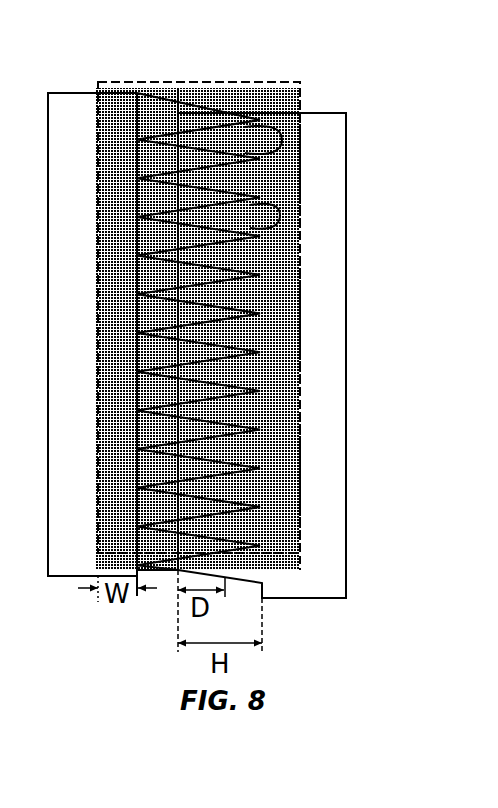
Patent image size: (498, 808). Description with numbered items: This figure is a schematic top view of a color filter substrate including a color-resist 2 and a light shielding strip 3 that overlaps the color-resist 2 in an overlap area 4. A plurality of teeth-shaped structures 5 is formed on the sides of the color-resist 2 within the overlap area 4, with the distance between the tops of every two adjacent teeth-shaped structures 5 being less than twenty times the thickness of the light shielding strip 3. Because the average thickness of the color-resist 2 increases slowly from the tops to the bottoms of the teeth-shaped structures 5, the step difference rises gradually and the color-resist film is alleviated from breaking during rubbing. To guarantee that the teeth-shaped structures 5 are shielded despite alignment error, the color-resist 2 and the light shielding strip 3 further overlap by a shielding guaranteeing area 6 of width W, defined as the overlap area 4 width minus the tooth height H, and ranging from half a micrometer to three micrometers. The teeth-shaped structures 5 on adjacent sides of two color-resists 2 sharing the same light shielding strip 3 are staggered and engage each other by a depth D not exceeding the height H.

The color-resist 2 is at (60, 92).
The light shielding strip 3 is at (162, 98).
The overlap area 4 is at (300, 322).
The teeth-shaped structures 5 is at (263, 120).
The shielding guaranteeing area 6 is at (117, 82).